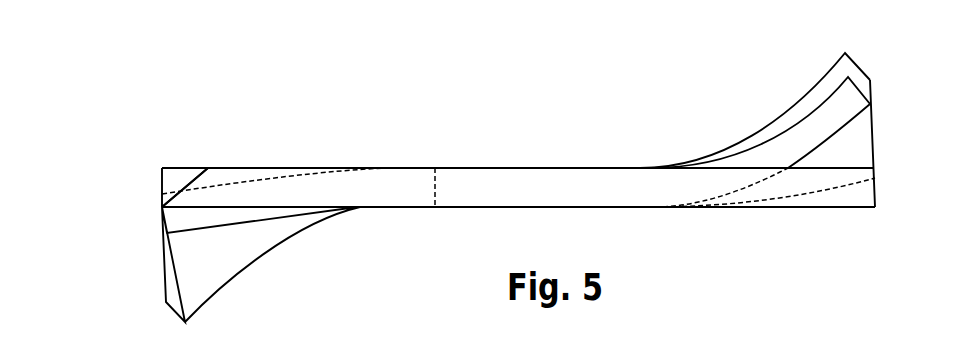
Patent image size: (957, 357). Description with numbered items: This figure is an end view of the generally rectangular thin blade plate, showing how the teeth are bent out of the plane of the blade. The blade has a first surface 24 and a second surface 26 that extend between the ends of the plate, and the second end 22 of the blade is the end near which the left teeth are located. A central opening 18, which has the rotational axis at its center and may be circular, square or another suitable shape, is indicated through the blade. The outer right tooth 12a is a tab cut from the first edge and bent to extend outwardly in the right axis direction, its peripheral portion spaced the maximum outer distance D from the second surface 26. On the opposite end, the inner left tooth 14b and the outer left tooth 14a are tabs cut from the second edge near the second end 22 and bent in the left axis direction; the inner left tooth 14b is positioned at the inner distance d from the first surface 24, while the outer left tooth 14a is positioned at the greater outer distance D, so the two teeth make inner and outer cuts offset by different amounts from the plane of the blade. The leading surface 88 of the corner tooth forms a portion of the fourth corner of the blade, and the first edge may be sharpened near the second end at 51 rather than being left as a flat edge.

The outer right tooth 12a is at (198, 260).
The outer left tooth 14a is at (853, 62).
The inner left tooth 14b is at (843, 102).
The central opening 18 is at (598, 207).
The second end 22 is at (415, 190).
The first surface 24 is at (330, 167).
The second surface 26 is at (422, 207).
The sharpened portion of first edge 51 is at (186, 184).
The leading surface of corner tooth 88 is at (847, 179).